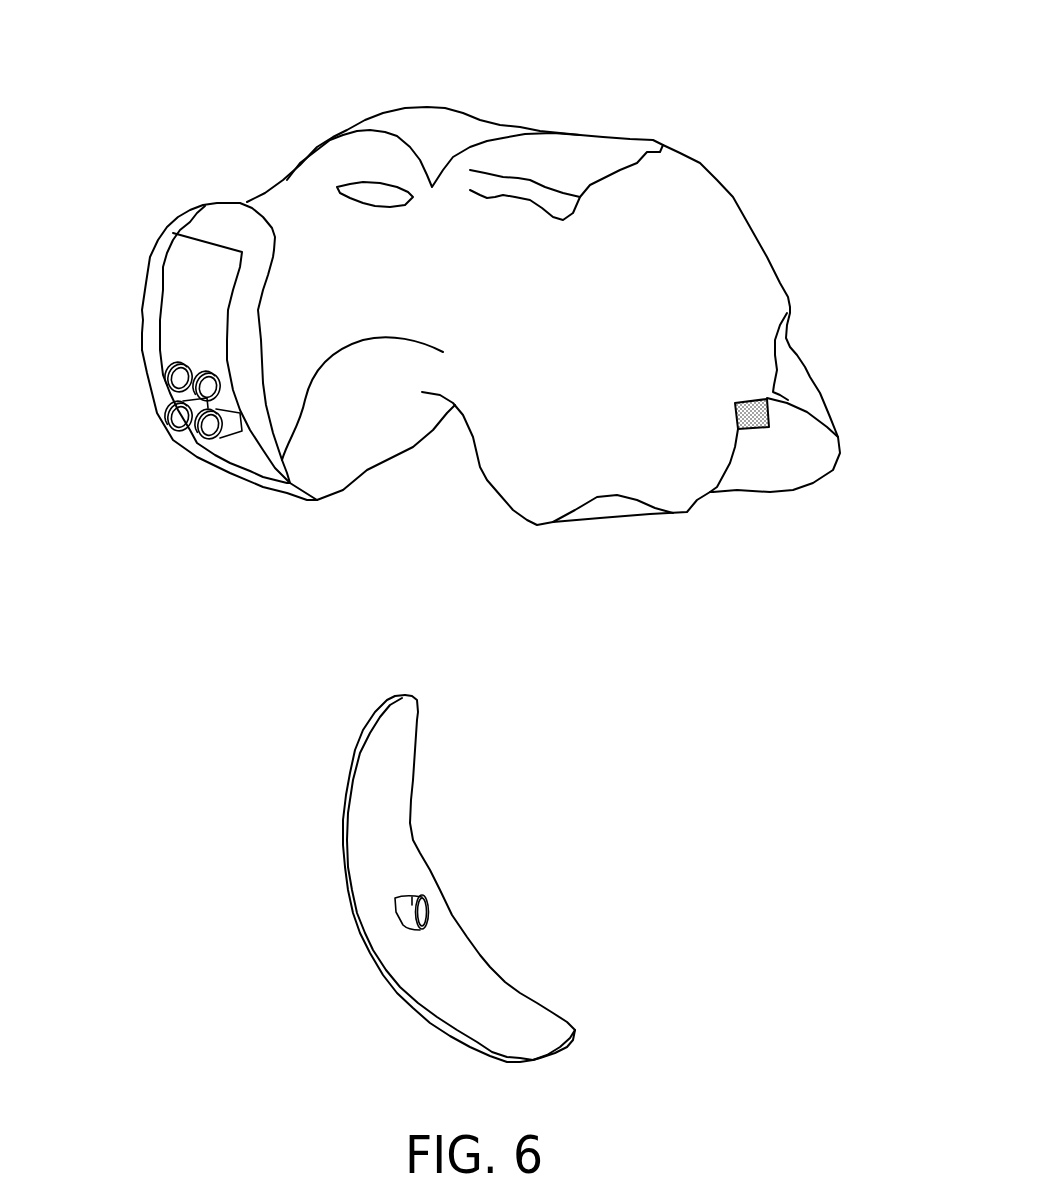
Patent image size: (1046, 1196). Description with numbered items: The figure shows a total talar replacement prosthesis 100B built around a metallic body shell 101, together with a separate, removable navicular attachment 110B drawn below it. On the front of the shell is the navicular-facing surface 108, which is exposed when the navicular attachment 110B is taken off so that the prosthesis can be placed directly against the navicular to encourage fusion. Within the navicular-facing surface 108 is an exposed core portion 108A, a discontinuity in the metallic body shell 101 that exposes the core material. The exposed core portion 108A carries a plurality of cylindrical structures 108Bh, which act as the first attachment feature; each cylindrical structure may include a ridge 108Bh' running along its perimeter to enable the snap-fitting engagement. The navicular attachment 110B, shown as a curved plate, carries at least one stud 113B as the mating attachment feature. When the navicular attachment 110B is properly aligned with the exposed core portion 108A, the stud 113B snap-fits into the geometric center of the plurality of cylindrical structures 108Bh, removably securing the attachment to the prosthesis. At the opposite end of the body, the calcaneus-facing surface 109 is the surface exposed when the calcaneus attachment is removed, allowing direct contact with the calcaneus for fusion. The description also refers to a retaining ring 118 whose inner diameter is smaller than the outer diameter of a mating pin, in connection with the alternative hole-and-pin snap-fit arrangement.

The total talar replacement prosthesis 100B is at (462, 276).
The metallic body shell 101 is at (330, 157).
The navicular-facing surface 108 is at (186, 339).
The exposed core portion 108A is at (192, 299).
The cylindrical structures 108Bh is at (141, 407).
The ridge 108Bh' is at (192, 464).
The calcaneus-facing surface 109 is at (785, 477).
The navicular attachment 110B is at (481, 878).
The stud 113B is at (412, 897).
The retaining ring 118 is at (497, 1018).